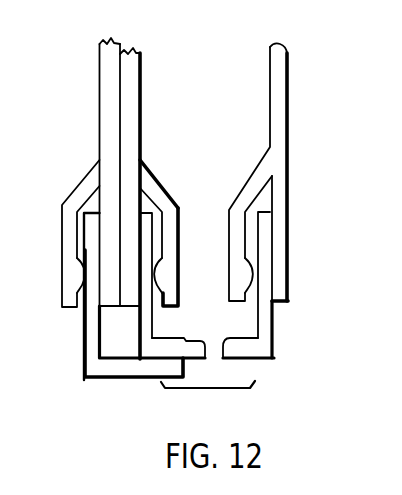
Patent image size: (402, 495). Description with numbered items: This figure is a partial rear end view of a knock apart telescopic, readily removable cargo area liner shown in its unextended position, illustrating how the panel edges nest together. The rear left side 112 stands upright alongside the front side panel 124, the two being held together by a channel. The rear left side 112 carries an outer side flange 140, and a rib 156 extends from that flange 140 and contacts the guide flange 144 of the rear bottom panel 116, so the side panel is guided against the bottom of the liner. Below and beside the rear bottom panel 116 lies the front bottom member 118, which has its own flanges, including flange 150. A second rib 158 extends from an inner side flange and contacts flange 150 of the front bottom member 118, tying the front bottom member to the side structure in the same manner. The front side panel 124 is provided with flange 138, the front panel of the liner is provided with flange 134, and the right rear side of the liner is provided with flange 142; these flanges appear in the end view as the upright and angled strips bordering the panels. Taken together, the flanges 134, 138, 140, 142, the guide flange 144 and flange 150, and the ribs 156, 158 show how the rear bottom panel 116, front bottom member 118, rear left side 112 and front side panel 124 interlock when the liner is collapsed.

The rear left side 112 is at (97, 89).
The front side panel 124 is at (142, 88).
The flange 140 is at (80, 182).
The rib 156 is at (79, 302).
The flange 134 is at (150, 172).
The flange 142 is at (179, 212).
The rib 158 is at (155, 253).
The flange 150 is at (158, 328).
The guide flange 144 is at (82, 333).
The front bottom member 118 is at (185, 341).
The rear bottom panel 116 is at (127, 380).
The flange 138 is at (255, 167).